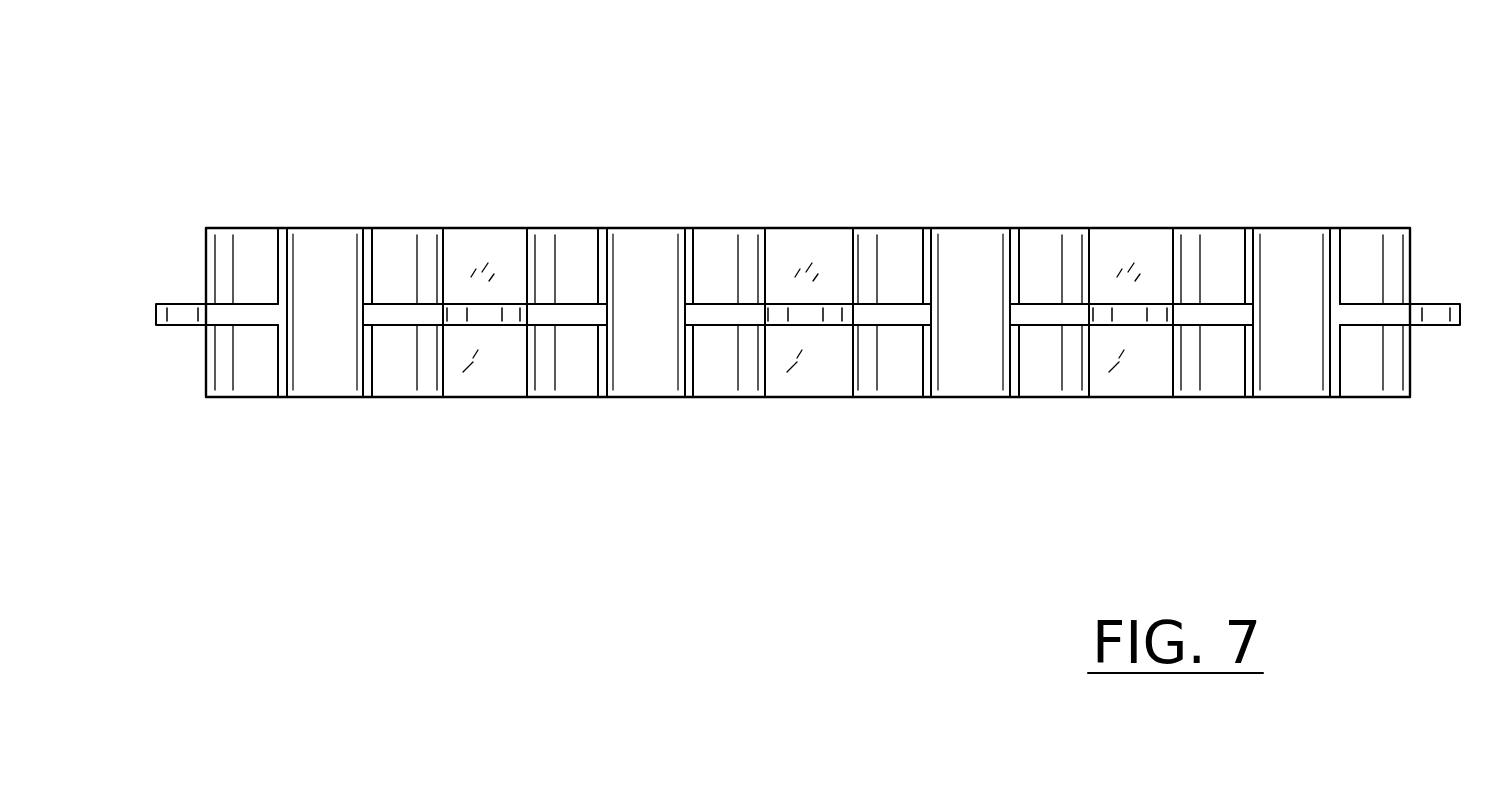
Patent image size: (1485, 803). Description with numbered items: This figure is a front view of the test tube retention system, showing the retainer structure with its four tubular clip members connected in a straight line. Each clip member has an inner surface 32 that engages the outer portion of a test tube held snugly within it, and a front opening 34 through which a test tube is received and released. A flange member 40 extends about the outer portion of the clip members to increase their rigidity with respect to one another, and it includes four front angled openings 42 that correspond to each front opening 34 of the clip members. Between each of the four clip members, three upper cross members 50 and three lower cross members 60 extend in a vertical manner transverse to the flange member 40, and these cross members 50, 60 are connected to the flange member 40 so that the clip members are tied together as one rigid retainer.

The inner surface 32 is at (328, 367).
The front opening 34 is at (370, 294).
The flange member 40 is at (183, 314).
The front angled opening 42 is at (274, 308).
The upper cross member 50 is at (478, 248).
The lower cross member 60 is at (490, 375).